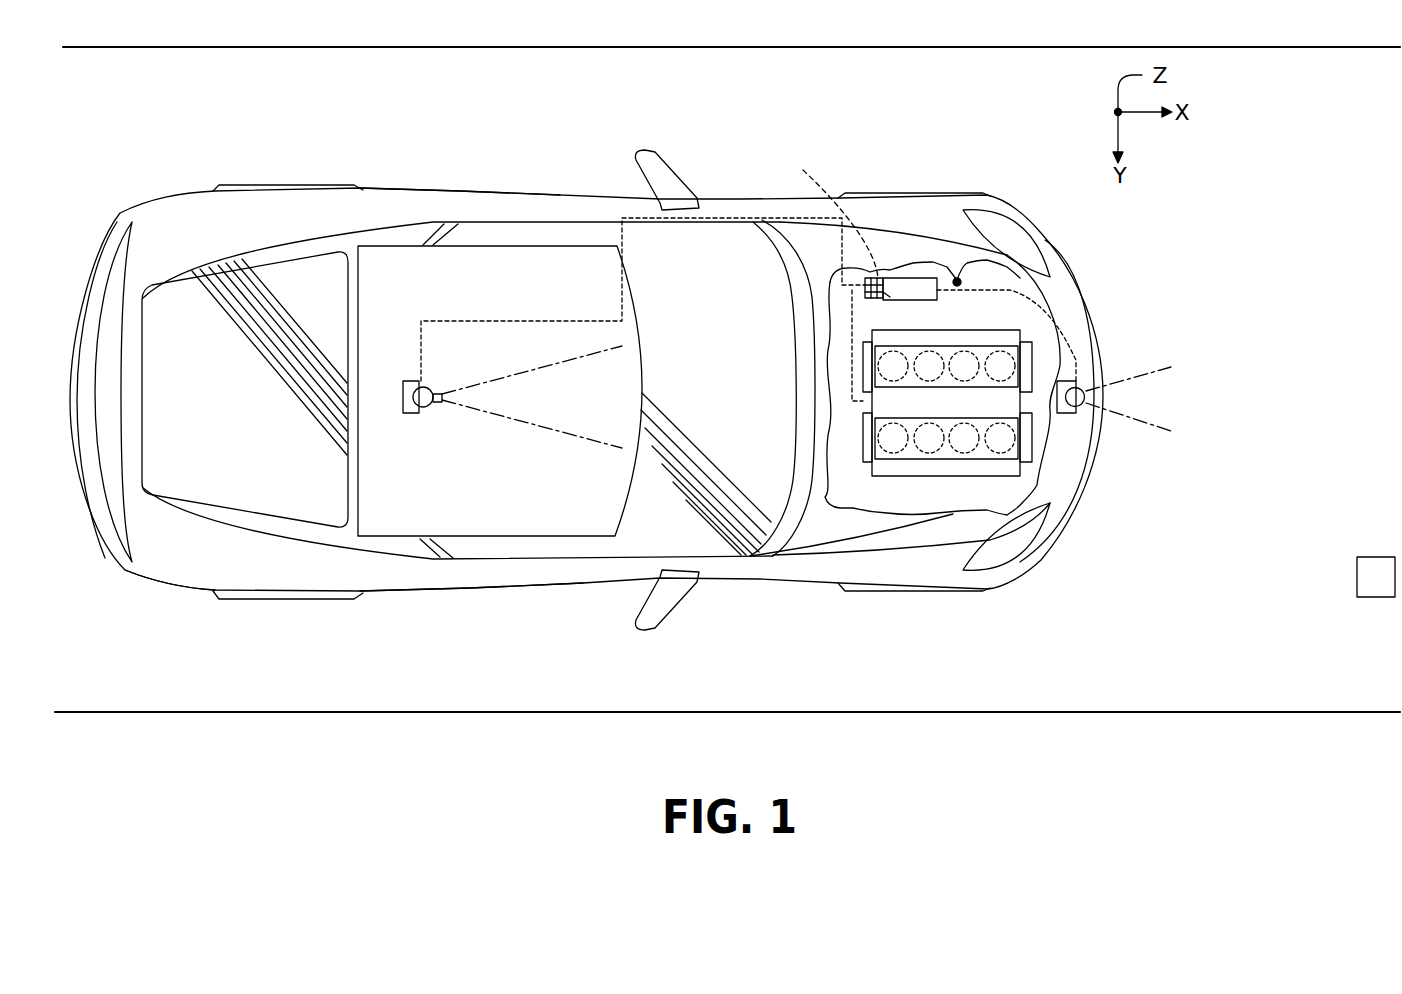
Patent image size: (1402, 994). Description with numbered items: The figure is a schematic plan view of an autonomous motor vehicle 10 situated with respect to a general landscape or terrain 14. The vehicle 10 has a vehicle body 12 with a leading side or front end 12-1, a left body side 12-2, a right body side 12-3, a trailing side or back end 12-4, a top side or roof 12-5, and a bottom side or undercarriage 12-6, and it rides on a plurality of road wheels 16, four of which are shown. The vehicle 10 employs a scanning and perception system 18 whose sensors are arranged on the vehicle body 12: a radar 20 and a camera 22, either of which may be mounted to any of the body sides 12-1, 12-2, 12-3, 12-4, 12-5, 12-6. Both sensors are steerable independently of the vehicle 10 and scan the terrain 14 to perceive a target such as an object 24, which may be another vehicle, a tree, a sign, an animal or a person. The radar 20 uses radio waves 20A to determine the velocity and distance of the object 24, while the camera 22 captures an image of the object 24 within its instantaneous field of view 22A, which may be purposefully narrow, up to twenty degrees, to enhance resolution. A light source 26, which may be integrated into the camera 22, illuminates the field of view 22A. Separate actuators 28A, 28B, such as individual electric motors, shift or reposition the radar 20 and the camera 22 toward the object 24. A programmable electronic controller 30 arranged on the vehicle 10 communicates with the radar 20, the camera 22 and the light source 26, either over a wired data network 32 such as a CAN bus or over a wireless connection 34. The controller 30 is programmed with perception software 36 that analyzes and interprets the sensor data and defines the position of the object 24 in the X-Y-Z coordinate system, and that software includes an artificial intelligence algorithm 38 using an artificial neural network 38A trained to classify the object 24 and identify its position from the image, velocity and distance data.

The motor vehicle 10 is at (1014, 595).
The vehicle body 12 is at (537, 272).
The front end 12-1 is at (1073, 292).
The left body side 12-2 is at (460, 192).
The right body side 12-3 is at (470, 584).
The back end 12-4 is at (85, 497).
The roof 12-5 is at (484, 478).
The undercarriage 12-6 is at (223, 533).
The terrain 14 is at (1067, 84).
The road wheels 16 is at (342, 185).
The scanning and perception system 18 is at (739, 251).
The radar 20 is at (1074, 415).
The radio waves 20A is at (1125, 416).
The camera 22 is at (430, 414).
The instantaneous field of view 22A is at (586, 424).
The object 24 is at (1364, 589).
The light source 26 is at (438, 393).
The actuator 28A is at (1059, 415).
The actuator 28B is at (414, 381).
The electronic controller 30 is at (887, 278).
The wired data network 32 is at (628, 308).
The wireless connection 34 is at (957, 279).
The perception software 36 is at (884, 300).
The artificial intelligence algorithm 38 is at (868, 278).
The artificial neural network 38A is at (829, 210).